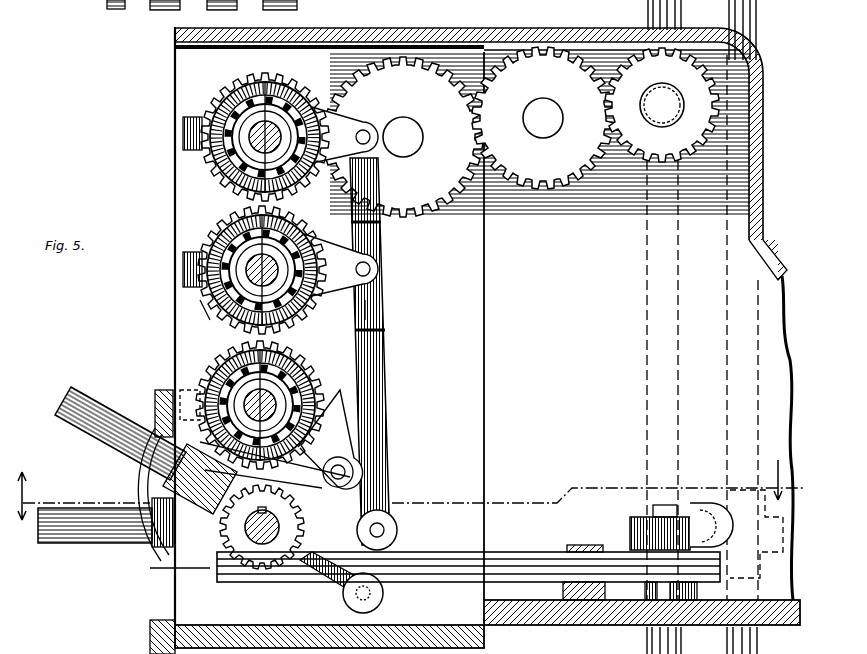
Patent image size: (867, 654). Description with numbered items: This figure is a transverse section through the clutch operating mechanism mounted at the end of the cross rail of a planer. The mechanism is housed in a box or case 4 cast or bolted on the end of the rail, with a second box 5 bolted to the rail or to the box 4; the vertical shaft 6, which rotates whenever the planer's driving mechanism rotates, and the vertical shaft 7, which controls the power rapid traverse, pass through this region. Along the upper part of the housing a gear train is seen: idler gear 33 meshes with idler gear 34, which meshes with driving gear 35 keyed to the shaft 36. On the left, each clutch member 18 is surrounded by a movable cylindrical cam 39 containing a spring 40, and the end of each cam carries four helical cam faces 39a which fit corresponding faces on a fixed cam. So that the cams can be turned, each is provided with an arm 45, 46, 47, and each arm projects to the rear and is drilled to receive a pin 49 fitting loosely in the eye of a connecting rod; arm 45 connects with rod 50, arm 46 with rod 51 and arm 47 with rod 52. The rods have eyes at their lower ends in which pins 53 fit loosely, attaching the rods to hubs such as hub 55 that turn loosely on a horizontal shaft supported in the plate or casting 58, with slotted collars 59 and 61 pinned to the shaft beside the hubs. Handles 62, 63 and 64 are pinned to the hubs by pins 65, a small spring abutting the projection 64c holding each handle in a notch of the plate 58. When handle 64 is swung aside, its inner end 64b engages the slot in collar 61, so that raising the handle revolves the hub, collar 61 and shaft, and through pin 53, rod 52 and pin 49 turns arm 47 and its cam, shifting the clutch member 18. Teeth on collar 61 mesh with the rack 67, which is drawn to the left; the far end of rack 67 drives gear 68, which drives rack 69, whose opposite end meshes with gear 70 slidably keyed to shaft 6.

The box or case 4 is at (394, 28).
The second box 5 is at (545, 28).
The vertical shaft 6 is at (770, 8).
The vertical shaft 7 is at (647, 10).
The clutch member 18 is at (215, 192).
The idler gear 33 is at (403, 137).
The idler gear 34 is at (543, 118).
The driving gear 35 is at (662, 82).
The shaft 36 is at (680, 100).
The movable cylindrical cam 39 is at (212, 170).
The helical cam faces 39a is at (225, 95).
The spring 40 is at (260, 261).
The arm 45 is at (363, 122).
The arm 46 is at (380, 250).
The arm 47 is at (350, 430).
The pin 49 is at (370, 130).
The rod 50 is at (381, 178).
The rod 51 is at (386, 312).
The rod 52 is at (392, 502).
The pin 53 is at (395, 531).
The hub 55 is at (395, 520).
The plate or casting 58 is at (165, 388).
The slotted collar 59 is at (206, 312).
The slotted collar 61 is at (285, 512).
The handle 62 is at (105, 494).
The handle 63 is at (102, 543).
The handle 64 is at (110, 432).
The inner end of handle 64b is at (275, 465).
The projection 64c is at (180, 573).
The pin 65 is at (185, 458).
The rack 67 is at (510, 552).
The gear 68 is at (630, 523).
The rack 69 is at (710, 503).
The gear 70 is at (759, 537).